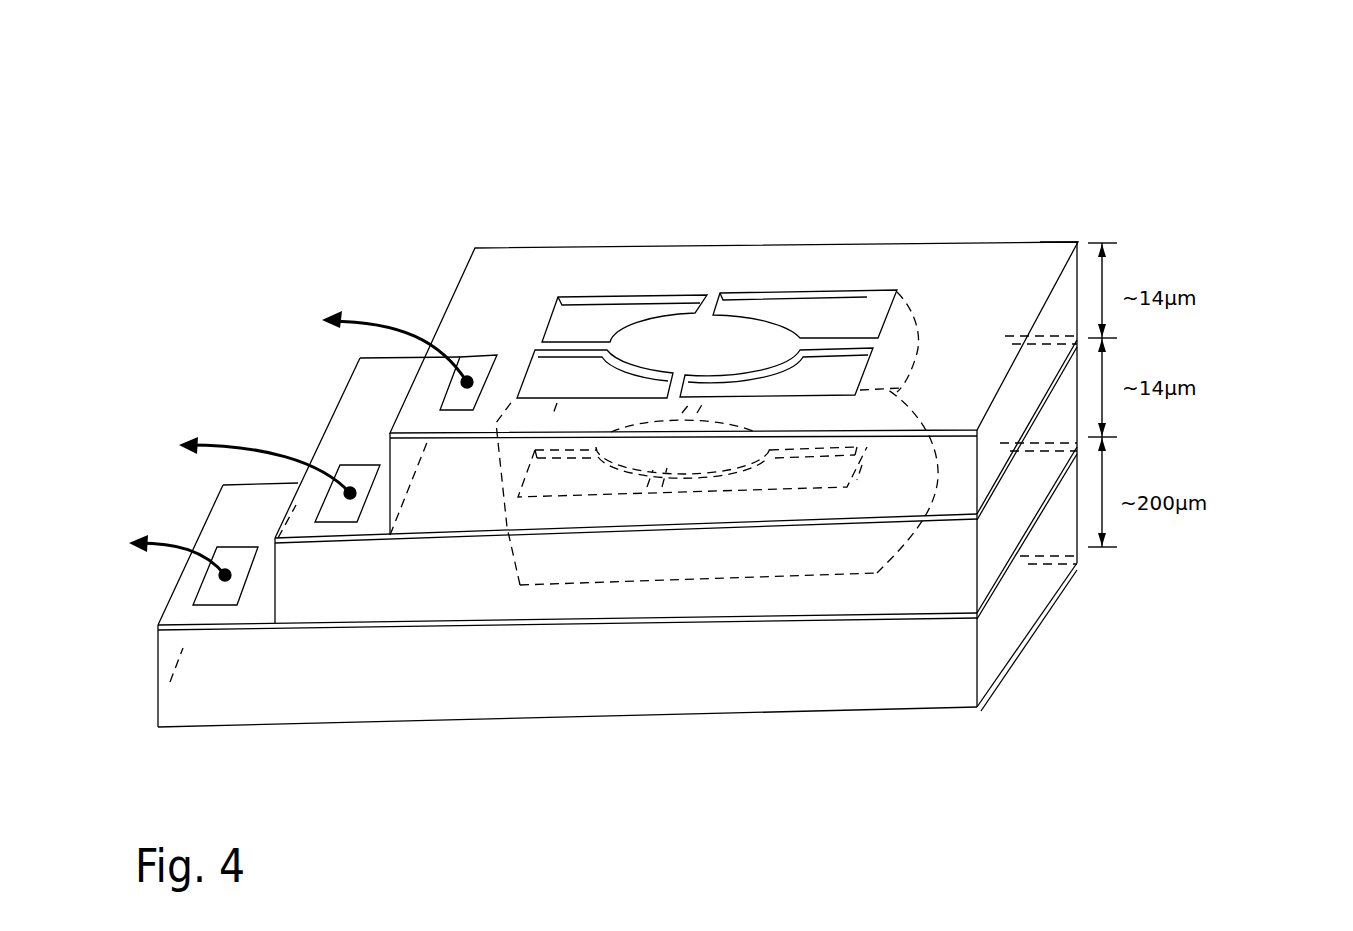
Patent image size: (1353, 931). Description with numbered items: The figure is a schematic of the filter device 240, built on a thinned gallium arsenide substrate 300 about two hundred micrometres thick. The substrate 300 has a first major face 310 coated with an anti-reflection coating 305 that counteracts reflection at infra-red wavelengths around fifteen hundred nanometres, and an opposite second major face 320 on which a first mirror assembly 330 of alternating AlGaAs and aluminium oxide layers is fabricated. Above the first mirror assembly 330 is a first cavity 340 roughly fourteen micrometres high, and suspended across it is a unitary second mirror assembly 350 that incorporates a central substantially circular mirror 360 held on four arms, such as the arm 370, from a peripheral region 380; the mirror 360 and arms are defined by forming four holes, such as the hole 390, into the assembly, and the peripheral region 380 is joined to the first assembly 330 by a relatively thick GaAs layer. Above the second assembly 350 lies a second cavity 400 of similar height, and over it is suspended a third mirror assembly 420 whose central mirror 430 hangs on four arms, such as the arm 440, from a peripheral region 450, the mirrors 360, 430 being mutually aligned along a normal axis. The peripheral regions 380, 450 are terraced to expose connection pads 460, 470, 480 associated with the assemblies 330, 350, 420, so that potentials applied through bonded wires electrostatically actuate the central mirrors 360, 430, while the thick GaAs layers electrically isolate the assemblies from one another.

The filter device 240 is at (1196, 116).
The thinned gallium arsenide substrate 300 is at (398, 690).
The anti-reflection coating 305 is at (930, 706).
The first major face 310 is at (484, 722).
The second major face 320 is at (180, 637).
The first mirror assembly 330 is at (912, 612).
The first cavity 340 is at (787, 557).
The second mirror assembly 350 is at (988, 517).
The central mirror 360 is at (650, 450).
The arm 370 is at (858, 392).
The peripheral region 380 is at (908, 453).
The hole 390 is at (740, 480).
The second cavity 400 is at (518, 417).
The third mirror assembly 420 is at (1086, 237).
The central mirror 430 is at (667, 330).
The arm 440 is at (830, 447).
The peripheral region 450 is at (945, 268).
The connection pad 460 is at (213, 590).
The connection pad 470 is at (338, 510).
The connection pad 480 is at (457, 397).